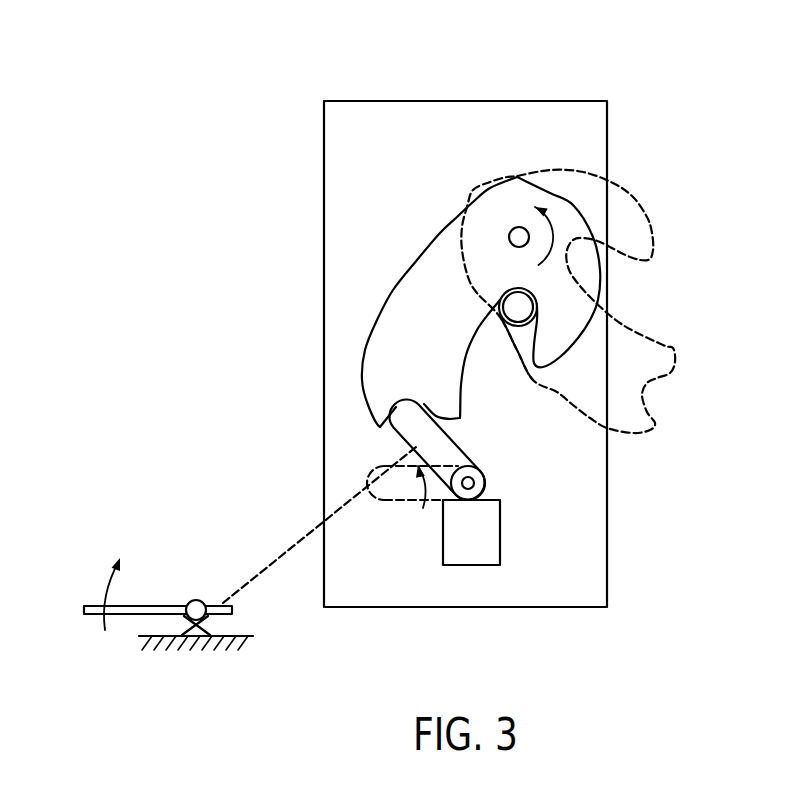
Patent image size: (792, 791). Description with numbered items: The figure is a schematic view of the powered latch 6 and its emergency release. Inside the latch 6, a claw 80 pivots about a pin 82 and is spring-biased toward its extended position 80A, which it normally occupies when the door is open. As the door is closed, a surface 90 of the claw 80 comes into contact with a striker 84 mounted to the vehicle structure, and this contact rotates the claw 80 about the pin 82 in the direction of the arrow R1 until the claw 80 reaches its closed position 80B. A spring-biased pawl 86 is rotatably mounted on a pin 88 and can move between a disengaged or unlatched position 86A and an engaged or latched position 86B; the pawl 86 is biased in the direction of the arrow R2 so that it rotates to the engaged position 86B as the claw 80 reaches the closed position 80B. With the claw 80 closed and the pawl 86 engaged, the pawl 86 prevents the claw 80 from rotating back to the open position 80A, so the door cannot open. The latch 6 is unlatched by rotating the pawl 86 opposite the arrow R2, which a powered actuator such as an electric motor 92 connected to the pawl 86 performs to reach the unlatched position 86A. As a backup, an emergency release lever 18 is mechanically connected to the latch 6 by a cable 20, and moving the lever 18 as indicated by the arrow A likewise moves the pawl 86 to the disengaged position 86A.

The powered latch 6 is at (468, 100).
The claw 80 is at (517, 177).
The extended position 80A is at (643, 218).
The closed position 80B is at (580, 340).
The pin 82 is at (511, 229).
The striker 84 is at (510, 337).
The pawl 86 is at (407, 440).
The disengaged position 86A is at (366, 481).
The engaged position 86B is at (407, 425).
The pin 88 is at (485, 483).
The surface 90 is at (472, 363).
The electric motor 92 is at (474, 558).
The emergency release lever 18 is at (125, 615).
The cable 20 is at (268, 567).
The arrow R1 is at (556, 222).
The arrow R2 is at (413, 492).
The arrow A is at (102, 592).